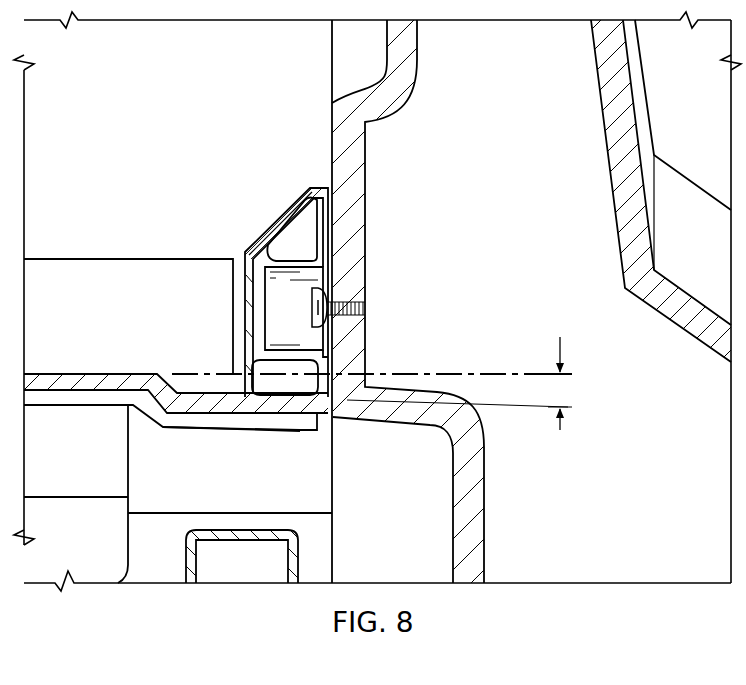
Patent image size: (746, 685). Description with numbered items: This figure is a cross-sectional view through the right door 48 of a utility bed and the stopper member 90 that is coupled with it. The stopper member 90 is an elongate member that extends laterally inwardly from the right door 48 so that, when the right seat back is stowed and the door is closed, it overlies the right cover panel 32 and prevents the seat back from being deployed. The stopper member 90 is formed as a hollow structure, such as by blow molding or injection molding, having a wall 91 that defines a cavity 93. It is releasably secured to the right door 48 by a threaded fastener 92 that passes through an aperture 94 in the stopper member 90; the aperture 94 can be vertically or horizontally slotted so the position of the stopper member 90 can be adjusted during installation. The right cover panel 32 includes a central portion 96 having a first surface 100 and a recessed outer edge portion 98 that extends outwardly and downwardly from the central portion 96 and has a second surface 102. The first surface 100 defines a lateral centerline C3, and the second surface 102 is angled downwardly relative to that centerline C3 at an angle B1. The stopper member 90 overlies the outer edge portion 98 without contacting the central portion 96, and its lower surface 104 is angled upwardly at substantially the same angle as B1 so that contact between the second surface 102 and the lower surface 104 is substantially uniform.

The right cover panel 32 is at (134, 334).
The right door 48 is at (651, 95).
The stopper member 90 is at (240, 240).
The wall 91 is at (276, 232).
The threaded fastener 92 is at (312, 302).
The cavity 93 is at (303, 232).
The aperture 94 is at (357, 315).
The central portion 96 is at (59, 362).
The recessed outer edge portion 98 is at (203, 443).
The first surface 100 is at (97, 372).
The second surface 102 is at (212, 392).
The lower surface 104 is at (297, 420).
The lateral centerline C3 is at (430, 370).
The angle B1 is at (560, 383).